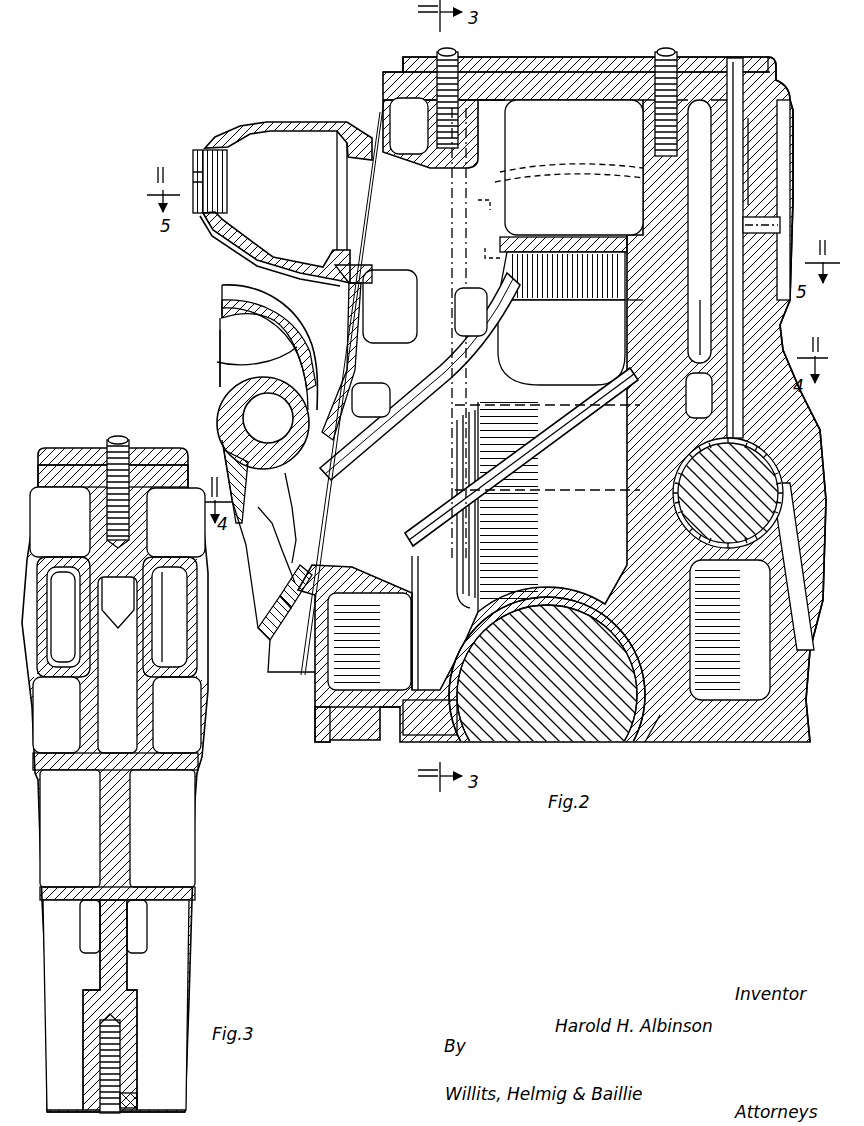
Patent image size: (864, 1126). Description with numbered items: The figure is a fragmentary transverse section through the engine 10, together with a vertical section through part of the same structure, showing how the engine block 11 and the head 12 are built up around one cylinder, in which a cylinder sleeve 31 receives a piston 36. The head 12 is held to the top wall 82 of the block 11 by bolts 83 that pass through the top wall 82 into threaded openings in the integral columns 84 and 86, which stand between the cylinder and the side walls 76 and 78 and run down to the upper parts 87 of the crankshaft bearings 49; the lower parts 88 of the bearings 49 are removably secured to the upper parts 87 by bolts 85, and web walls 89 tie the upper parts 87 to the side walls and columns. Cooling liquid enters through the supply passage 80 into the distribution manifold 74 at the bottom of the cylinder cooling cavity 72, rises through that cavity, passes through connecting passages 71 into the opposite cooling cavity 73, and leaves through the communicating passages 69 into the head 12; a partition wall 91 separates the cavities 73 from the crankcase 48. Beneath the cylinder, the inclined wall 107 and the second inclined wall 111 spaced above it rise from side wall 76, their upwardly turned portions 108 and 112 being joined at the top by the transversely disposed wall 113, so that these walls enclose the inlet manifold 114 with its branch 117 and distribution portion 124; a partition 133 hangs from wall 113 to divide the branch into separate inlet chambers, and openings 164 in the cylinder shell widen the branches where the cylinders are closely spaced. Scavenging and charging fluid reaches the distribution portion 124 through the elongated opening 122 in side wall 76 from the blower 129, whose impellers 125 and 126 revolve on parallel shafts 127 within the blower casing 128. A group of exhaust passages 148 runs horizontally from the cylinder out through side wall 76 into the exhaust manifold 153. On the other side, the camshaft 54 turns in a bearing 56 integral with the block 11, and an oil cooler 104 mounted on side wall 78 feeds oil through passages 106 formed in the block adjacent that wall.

In FIG. 2, the engine 10 is at (384, 84).
In FIG. 2, the engine block 11 is at (772, 92).
In FIG. 2, the head 12 is at (498, 58).
In FIG. 3, the head 12 is at (146, 455).
In FIG. 2, the cylinder sleeve 31 is at (470, 190).
In FIG. 2, the piston 36 is at (598, 172).
In FIG. 2, the crankcase 48 is at (334, 742).
In FIG. 2, the crankshaft bearing 49 is at (462, 735).
In FIG. 3, the crankshaft bearing 49 is at (45, 1108).
In FIG. 2, the camshaft 54 is at (760, 466).
In FIG. 2, the bearing 56 is at (760, 440).
In FIG. 2, the communicating passage 69 is at (545, 60).
In FIG. 2, the connecting passage 71 is at (560, 110).
In FIG. 3, the connecting passage 71 is at (118, 612).
In FIG. 2, the cylinder cooling cavity 72 is at (400, 113).
In FIG. 2, the cylinder cooling cavity 73 is at (703, 108).
In FIG. 2, the cooling liquid distribution manifold 74 is at (352, 312).
In FIG. 2, the side wall 76 is at (360, 342).
In FIG. 2, the side wall 78 is at (762, 146).
In FIG. 2, the cooling liquid supply passage 80 is at (778, 238).
In FIG. 2, the top wall 82 is at (690, 78).
In FIG. 3, the top wall 82 is at (62, 470).
In FIG. 2, the bolt 83 is at (437, 58).
In FIG. 3, the bolt 83 is at (108, 520).
In FIG. 2, the integral column 84 is at (433, 318).
In FIG. 3, the integral column 84 is at (95, 514).
In FIG. 2, the bolt 85 is at (700, 300).
In FIG. 3, the bolt 85 is at (108, 1040).
In FIG. 2, the integral column 86 is at (650, 575).
In FIG. 2, the upper part of crankshaft bearing 87 is at (538, 602).
In FIG. 3, the upper part of crankshaft bearing 87 is at (137, 992).
In FIG. 2, the lower part of crankshaft bearing 88 is at (663, 717).
In FIG. 3, the lower part of crankshaft bearing 88 is at (137, 1100).
In FIG. 2, the web wall 89 is at (607, 400).
In FIG. 2, the partition wall 91 is at (700, 373).
In FIG. 2, the oil cooler 104 is at (786, 104).
In FIG. 2, the oil passage 106 is at (742, 62).
In FIG. 2, the inclined wall 107 is at (528, 444).
In FIG. 3, the inclined wall 107 is at (170, 896).
In FIG. 2, the upwardly turned wall portion 108 is at (628, 290).
In FIG. 2, the inclined wall 111 is at (422, 410).
In FIG. 3, the inclined wall 111 is at (177, 770).
In FIG. 2, the upwardly curved wall portion 112 is at (446, 262).
In FIG. 2, the transversely disposed wall 113 is at (566, 240).
In FIG. 2, the inlet manifold 114 is at (285, 586).
In FIG. 3, the inlet manifold 114 is at (77, 847).
In FIG. 2, the manifold branch 117 is at (462, 427).
In FIG. 2, the elongated opening 122 is at (337, 477).
In FIG. 2, the distribution portion 124 is at (415, 578).
In FIG. 2, the impeller 125 is at (245, 364).
In FIG. 2, the impeller 126 is at (342, 540).
In FIG. 2, the shaft 127 is at (220, 400).
In FIG. 2, the blower casing 128 is at (232, 312).
In FIG. 2, the blower 129 is at (285, 640).
In FIG. 2, the partition 133 is at (540, 298).
In FIG. 3, the group of exhaust passages 148 is at (60, 648).
In FIG. 2, the exhaust manifold 153 is at (266, 122).
In FIG. 2, the opening 164 is at (622, 318).